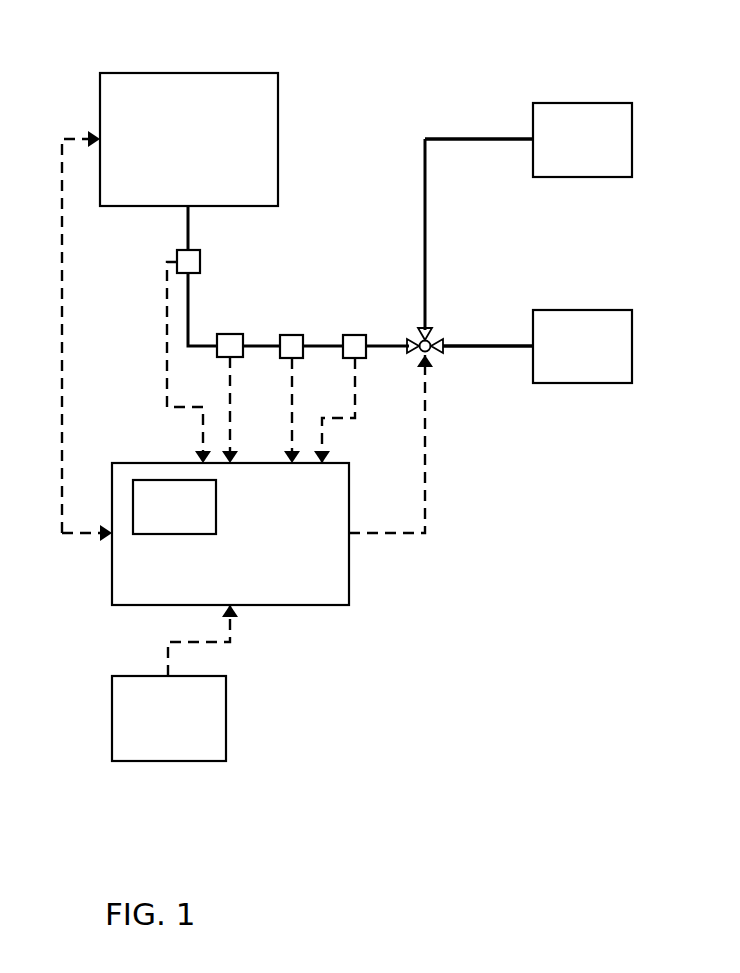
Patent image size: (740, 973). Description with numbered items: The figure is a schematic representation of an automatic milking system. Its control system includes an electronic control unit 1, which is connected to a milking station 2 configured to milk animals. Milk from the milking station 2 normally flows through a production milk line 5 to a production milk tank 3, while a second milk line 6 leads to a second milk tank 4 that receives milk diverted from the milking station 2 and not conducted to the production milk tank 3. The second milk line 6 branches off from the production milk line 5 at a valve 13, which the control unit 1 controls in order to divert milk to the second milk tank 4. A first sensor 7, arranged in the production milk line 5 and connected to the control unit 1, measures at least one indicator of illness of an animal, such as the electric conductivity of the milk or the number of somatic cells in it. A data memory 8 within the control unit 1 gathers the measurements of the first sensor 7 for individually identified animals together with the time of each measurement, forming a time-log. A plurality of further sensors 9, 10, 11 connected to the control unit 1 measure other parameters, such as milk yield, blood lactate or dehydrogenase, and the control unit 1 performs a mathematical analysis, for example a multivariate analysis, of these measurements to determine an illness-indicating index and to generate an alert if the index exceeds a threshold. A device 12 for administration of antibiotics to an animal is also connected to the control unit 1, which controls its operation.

The electronic control unit 1 is at (349, 571).
The milking station 2 is at (233, 73).
The production milk tank 3 is at (582, 310).
The second milk tank 4 is at (593, 112).
The production milk line 5 is at (462, 346).
The second milk line 6 is at (428, 139).
The first sensor 7 is at (177, 250).
The data memory 8 is at (158, 487).
The further sensor 9 is at (230, 334).
The further sensor 10 is at (291, 335).
The further sensor 11 is at (355, 335).
The device for administration of antibiotics 12 is at (226, 717).
The valve 13 is at (439, 353).